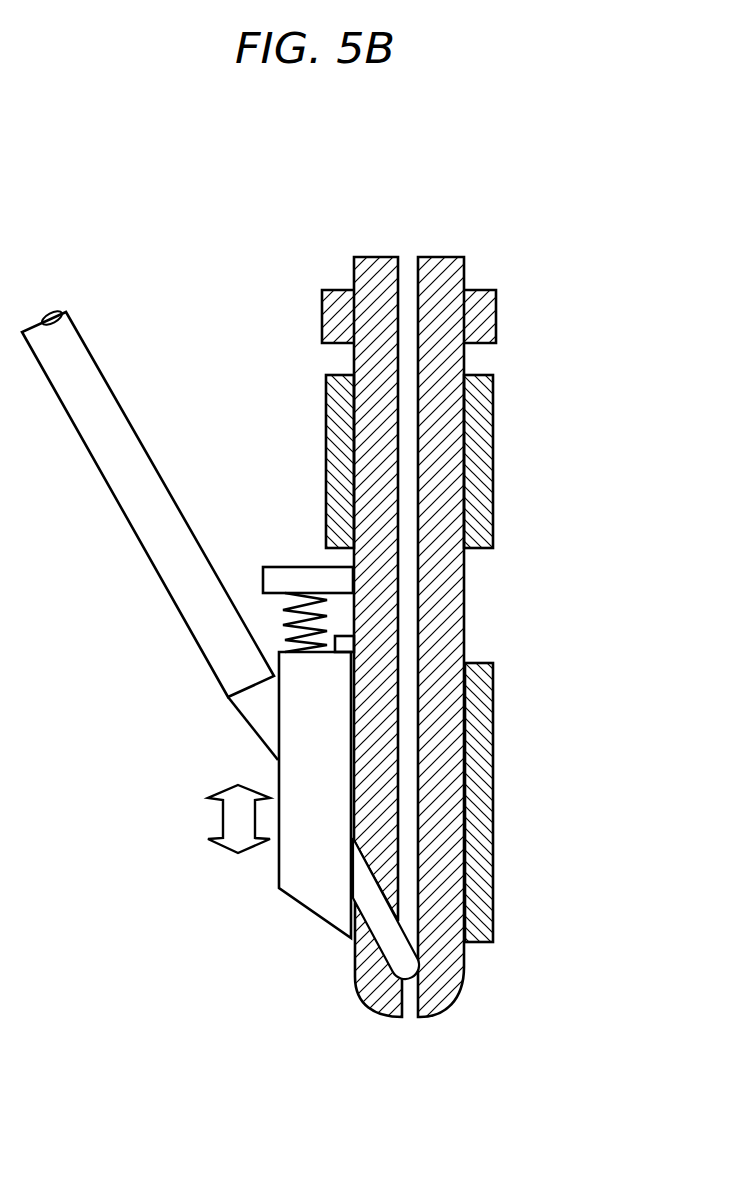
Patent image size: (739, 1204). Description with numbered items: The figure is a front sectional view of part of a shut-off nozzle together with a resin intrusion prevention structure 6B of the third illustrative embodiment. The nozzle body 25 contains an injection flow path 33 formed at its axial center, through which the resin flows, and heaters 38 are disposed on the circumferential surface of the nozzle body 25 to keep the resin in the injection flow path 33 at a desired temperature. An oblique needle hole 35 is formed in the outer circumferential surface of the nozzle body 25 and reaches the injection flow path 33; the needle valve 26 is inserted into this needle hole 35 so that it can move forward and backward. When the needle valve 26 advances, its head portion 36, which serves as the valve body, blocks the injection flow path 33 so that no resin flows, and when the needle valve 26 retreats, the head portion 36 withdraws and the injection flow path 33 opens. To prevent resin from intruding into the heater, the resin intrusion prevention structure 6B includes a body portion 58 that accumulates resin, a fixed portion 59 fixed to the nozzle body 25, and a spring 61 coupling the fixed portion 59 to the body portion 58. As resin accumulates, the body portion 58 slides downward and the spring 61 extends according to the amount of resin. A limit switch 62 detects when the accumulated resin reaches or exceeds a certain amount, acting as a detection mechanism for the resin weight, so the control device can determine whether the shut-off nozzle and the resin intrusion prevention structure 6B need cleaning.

The nozzle body 25 is at (496, 334).
The needle valve 26 is at (166, 590).
The injection flow path 33 is at (425, 583).
The needle hole 35 is at (378, 936).
The head portion 36 is at (410, 978).
The heater 38 is at (493, 468).
The body portion 58 is at (279, 879).
The fixed portion 59 is at (277, 567).
The spring 61 is at (283, 611).
The limit switch 62 is at (350, 630).
The resin intrusion prevention structure 6B is at (160, 752).